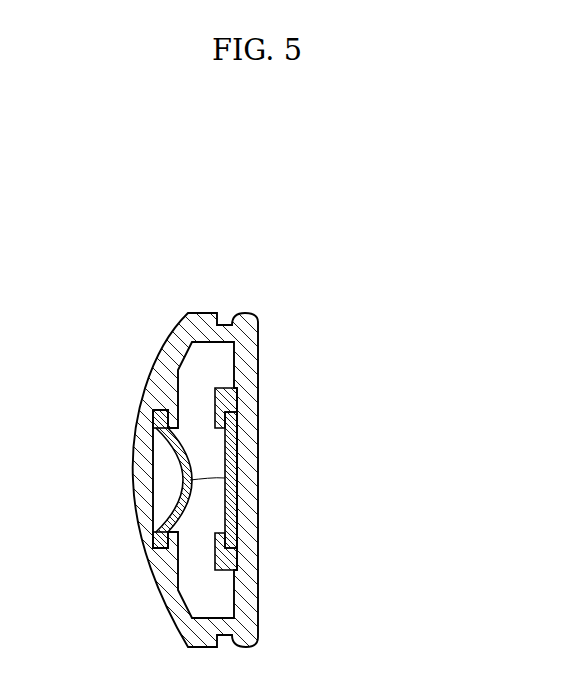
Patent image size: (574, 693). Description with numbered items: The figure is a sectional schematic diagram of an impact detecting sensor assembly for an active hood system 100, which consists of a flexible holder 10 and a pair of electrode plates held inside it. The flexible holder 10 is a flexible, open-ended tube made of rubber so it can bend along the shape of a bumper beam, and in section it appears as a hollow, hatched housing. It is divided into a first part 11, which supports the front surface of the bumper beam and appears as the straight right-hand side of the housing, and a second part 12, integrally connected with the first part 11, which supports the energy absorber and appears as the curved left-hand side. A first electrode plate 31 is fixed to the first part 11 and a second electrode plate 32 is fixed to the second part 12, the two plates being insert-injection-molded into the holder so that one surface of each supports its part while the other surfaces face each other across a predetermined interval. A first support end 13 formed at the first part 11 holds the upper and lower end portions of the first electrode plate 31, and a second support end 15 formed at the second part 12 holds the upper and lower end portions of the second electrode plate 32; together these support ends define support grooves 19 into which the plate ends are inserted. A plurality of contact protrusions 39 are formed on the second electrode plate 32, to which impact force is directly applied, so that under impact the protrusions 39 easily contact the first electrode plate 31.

The impact detecting sensor assembly for an active hood system 100 is at (237, 172).
The flexible holder 10 is at (278, 230).
The first part 11 is at (258, 366).
The second part 12 is at (145, 383).
The first support end 13 is at (217, 396).
The second support end 15 is at (168, 447).
The support grooves 19 is at (214, 393).
The first electrode plate 31 is at (230, 456).
The second electrode plate 32 is at (155, 418).
The contact protrusions 39 is at (253, 491).